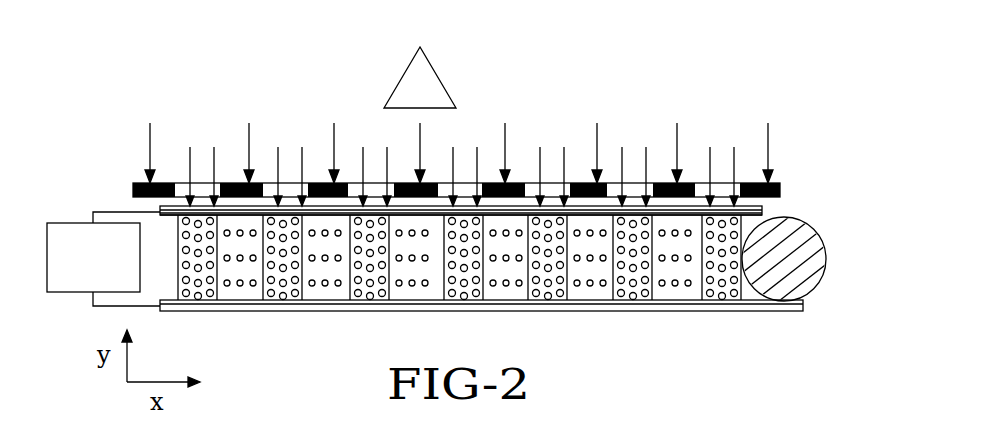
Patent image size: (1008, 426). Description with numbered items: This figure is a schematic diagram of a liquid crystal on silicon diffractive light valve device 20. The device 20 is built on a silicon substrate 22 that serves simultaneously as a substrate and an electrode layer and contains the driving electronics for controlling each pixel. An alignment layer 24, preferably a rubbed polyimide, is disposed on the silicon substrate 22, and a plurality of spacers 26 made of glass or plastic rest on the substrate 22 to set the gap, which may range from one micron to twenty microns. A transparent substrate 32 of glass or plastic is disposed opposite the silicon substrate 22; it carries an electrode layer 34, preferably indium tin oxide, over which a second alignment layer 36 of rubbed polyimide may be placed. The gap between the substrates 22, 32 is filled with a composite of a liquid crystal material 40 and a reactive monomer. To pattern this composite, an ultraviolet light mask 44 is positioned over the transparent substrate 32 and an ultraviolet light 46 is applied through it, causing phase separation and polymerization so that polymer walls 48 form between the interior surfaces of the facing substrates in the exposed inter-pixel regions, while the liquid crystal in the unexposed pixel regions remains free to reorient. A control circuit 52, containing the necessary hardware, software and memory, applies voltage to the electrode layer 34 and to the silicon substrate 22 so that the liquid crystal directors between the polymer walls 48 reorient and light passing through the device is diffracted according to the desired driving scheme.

The liquid crystal on silicon diffractive light valve device 20 is at (176, 91).
The silicon substrate 22 is at (803, 310).
The alignment layer 24 is at (803, 302).
The spacers 26 is at (805, 250).
The transparent substrate 32 is at (762, 209).
The electrode layer 34 is at (763, 211).
The alignment layer 36 is at (763, 214).
The liquid crystal material 40 is at (590, 285).
The ultraviolet light mask 44 is at (692, 182).
The ultraviolet light 46 is at (423, 70).
The polymer walls 48 is at (735, 287).
The control circuit 52 is at (72, 222).